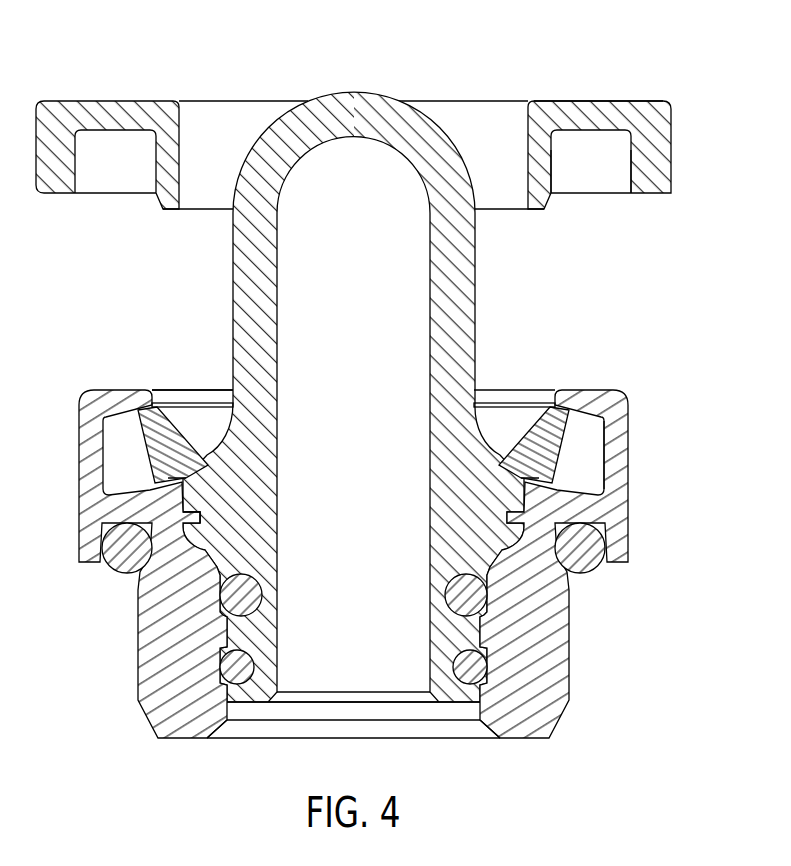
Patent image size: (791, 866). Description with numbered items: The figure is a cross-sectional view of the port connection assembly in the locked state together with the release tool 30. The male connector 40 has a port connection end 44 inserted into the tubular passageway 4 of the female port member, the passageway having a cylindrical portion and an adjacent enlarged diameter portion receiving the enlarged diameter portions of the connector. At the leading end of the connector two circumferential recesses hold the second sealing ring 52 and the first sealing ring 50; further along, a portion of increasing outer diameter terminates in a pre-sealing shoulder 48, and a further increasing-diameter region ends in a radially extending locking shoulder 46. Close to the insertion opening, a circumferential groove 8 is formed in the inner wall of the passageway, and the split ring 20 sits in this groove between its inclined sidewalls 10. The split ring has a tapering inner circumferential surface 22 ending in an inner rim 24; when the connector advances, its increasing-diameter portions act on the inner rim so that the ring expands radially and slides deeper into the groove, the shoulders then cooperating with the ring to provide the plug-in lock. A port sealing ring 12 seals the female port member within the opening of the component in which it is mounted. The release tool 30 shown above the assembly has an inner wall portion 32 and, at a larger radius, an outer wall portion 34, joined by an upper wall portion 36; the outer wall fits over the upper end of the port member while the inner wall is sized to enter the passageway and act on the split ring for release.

The tubular passageway 4 is at (227, 703).
The circumferential groove 8 is at (585, 437).
The sidewalls 10 is at (595, 402).
The port sealing ring 12 is at (115, 567).
The split ring 20 is at (120, 448).
The inner circumferential surface 22 is at (533, 404).
The inner rim 24 is at (505, 450).
The release tool 30 is at (684, 86).
The inner wall portion 32 is at (554, 182).
The outer wall portion 34 is at (633, 193).
The upper wall portion 36 is at (596, 101).
The male connector 40 is at (407, 88).
The port connection end 44 is at (210, 380).
The locking shoulder 46 is at (215, 486).
The pre-sealing shoulder 48 is at (197, 510).
The first sealing ring 50 is at (487, 595).
The second sealing ring 52 is at (483, 672).